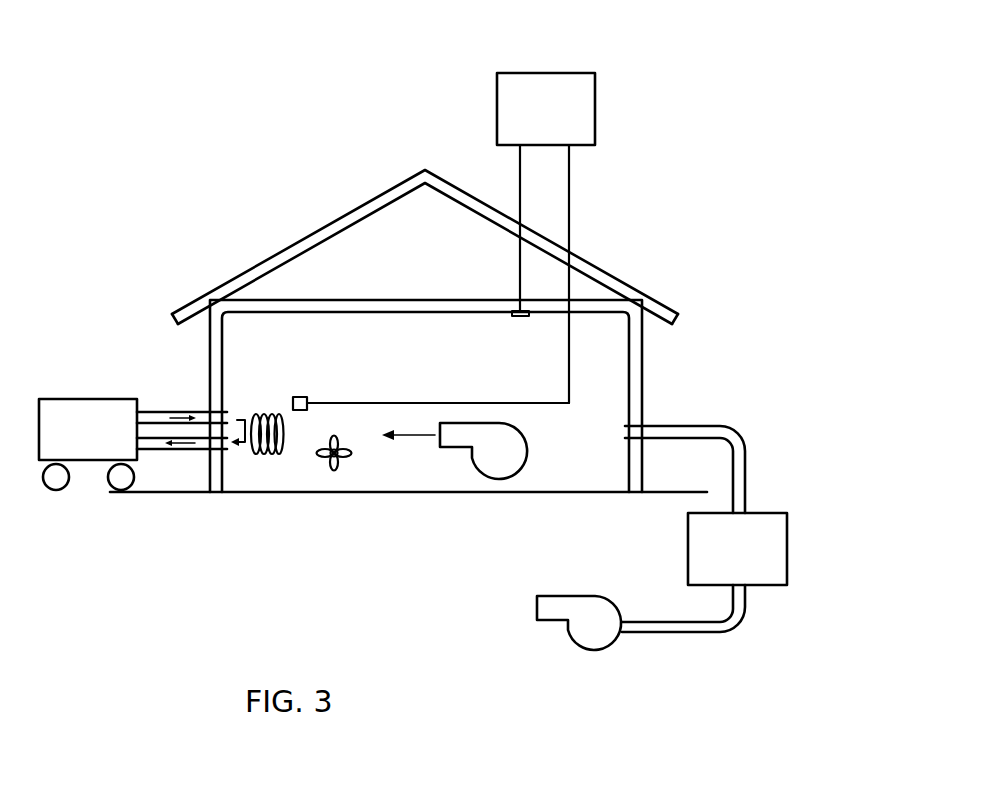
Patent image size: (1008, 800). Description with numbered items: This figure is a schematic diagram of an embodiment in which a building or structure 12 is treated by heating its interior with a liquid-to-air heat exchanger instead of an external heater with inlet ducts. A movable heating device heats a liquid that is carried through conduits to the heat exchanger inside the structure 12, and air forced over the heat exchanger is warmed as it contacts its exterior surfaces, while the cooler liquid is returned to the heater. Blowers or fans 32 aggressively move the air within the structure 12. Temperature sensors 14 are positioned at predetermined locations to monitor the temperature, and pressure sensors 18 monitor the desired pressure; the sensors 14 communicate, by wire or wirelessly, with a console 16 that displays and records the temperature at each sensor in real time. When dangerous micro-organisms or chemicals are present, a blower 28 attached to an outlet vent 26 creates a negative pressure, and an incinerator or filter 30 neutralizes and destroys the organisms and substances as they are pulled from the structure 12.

The structure 12 is at (360, 196).
The temperature sensor 14 is at (300, 397).
The console 16 is at (530, 73).
The pressure sensor 18 is at (514, 316).
The outlet vent 26 is at (745, 472).
The blower 28 is at (597, 641).
The incinerator or filter 30 is at (787, 547).
The blowers or fans 32 is at (320, 459).